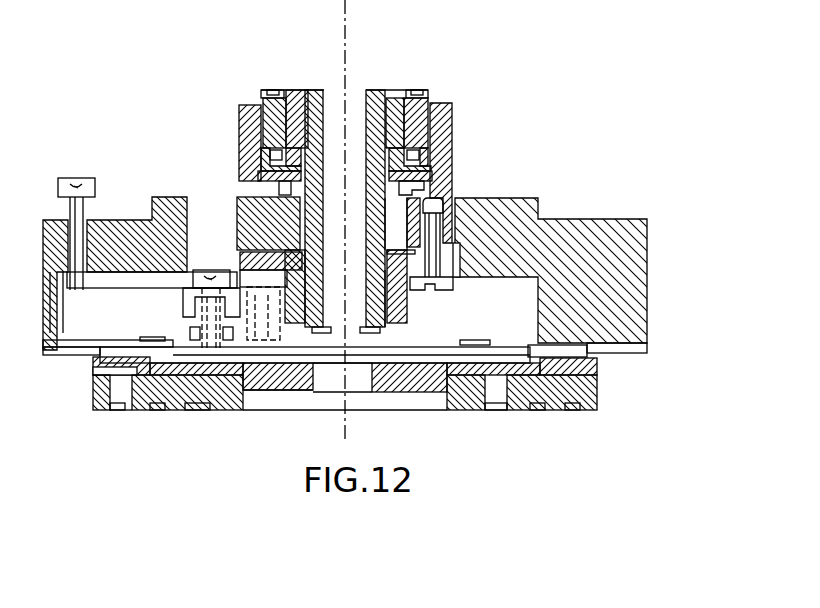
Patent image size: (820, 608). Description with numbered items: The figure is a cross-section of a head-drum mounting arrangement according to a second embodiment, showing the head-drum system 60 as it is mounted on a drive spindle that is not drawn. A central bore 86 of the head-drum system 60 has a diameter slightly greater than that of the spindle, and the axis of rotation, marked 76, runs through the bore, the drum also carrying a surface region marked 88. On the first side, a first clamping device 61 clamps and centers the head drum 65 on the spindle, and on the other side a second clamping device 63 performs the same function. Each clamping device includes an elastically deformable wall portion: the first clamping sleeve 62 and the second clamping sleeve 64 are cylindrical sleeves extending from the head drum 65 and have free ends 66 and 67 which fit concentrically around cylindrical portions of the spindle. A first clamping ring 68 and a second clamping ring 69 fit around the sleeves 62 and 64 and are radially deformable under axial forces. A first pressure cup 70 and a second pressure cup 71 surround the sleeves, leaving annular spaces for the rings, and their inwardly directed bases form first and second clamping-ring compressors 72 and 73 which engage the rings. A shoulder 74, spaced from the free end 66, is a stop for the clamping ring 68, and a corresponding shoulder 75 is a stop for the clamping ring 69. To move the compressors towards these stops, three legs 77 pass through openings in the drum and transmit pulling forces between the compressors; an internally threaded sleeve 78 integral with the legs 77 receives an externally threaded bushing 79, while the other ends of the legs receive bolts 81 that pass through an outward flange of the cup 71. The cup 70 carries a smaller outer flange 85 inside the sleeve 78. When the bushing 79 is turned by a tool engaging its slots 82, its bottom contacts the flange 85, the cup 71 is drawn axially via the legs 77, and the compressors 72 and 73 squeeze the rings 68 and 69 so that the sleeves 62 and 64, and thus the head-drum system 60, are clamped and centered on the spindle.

The head-drum system 60 is at (181, 180).
The first clamping device 61 is at (250, 92).
The first elastically deformable wall portion 62 is at (316, 106).
The second clamping device 63 is at (412, 304).
The second elastically deformable wall portion 64 is at (330, 313).
The head drum 65 is at (632, 268).
The free end of first clamping sleeve 66 is at (382, 100).
The free end of second clamping sleeve 67 is at (368, 330).
The first clamping ring 68 is at (300, 108).
The second clamping ring 69 is at (310, 312).
The first pressure element or cup 70 is at (398, 132).
The second pressure element or cup 71 is at (406, 298).
The first clamping-ring compressor 72 is at (383, 96).
The second clamping-ring compressor 73 is at (378, 320).
The shoulder 74 is at (386, 154).
The shoulder 75 is at (303, 270).
The axis 76 is at (347, 2).
The legs 77 is at (440, 180).
The internally threaded sleeve 78 is at (247, 120).
The externally threaded bushing 79 is at (273, 99).
The bolt 81 is at (431, 262).
The slots 82 is at (266, 95).
The outer flange 85 is at (420, 156).
The central bore 86 is at (356, 108).
The housing surface 88 is at (460, 222).